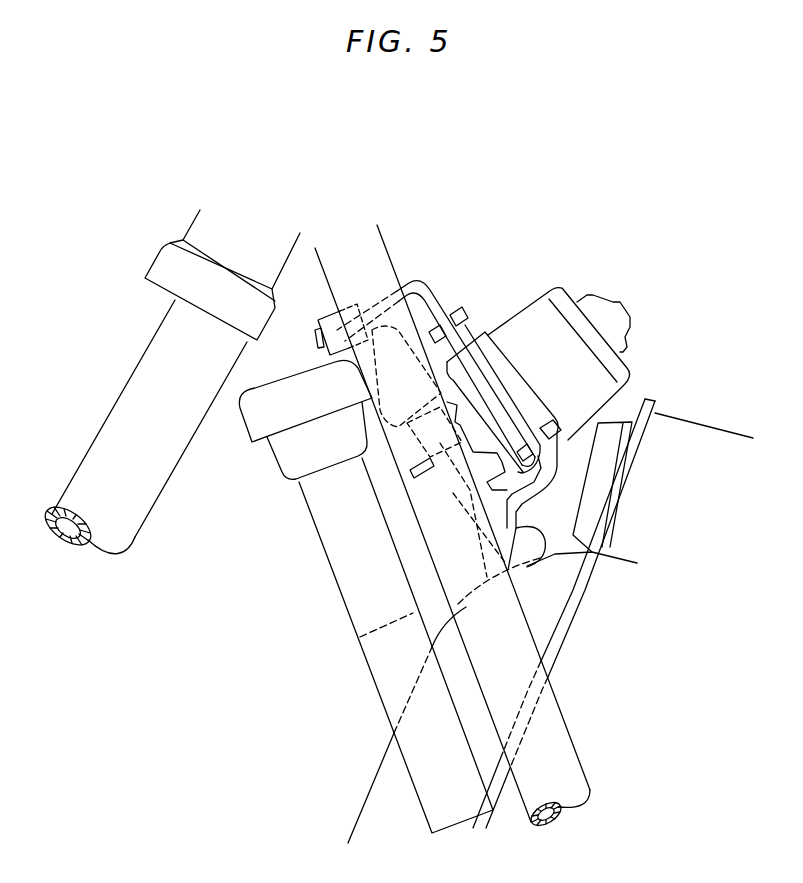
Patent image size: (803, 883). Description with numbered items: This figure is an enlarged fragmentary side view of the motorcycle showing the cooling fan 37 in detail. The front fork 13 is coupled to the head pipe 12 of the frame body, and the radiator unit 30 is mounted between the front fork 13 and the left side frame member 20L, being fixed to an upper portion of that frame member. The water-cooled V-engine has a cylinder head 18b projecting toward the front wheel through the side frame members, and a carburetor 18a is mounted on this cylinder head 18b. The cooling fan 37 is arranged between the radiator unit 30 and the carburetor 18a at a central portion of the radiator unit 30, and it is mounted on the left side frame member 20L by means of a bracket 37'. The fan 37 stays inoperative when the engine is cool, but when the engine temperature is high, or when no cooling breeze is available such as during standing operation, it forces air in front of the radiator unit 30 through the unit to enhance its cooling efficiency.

The head pipe 12 is at (215, 237).
The front fork 13 is at (128, 517).
The radiator unit 30 is at (329, 571).
The left side frame member 20L is at (547, 730).
The carburetor 18a is at (673, 432).
The cylinder head 18b is at (378, 777).
The cooling fan 37 is at (501, 409).
The bracket 37' is at (438, 322).